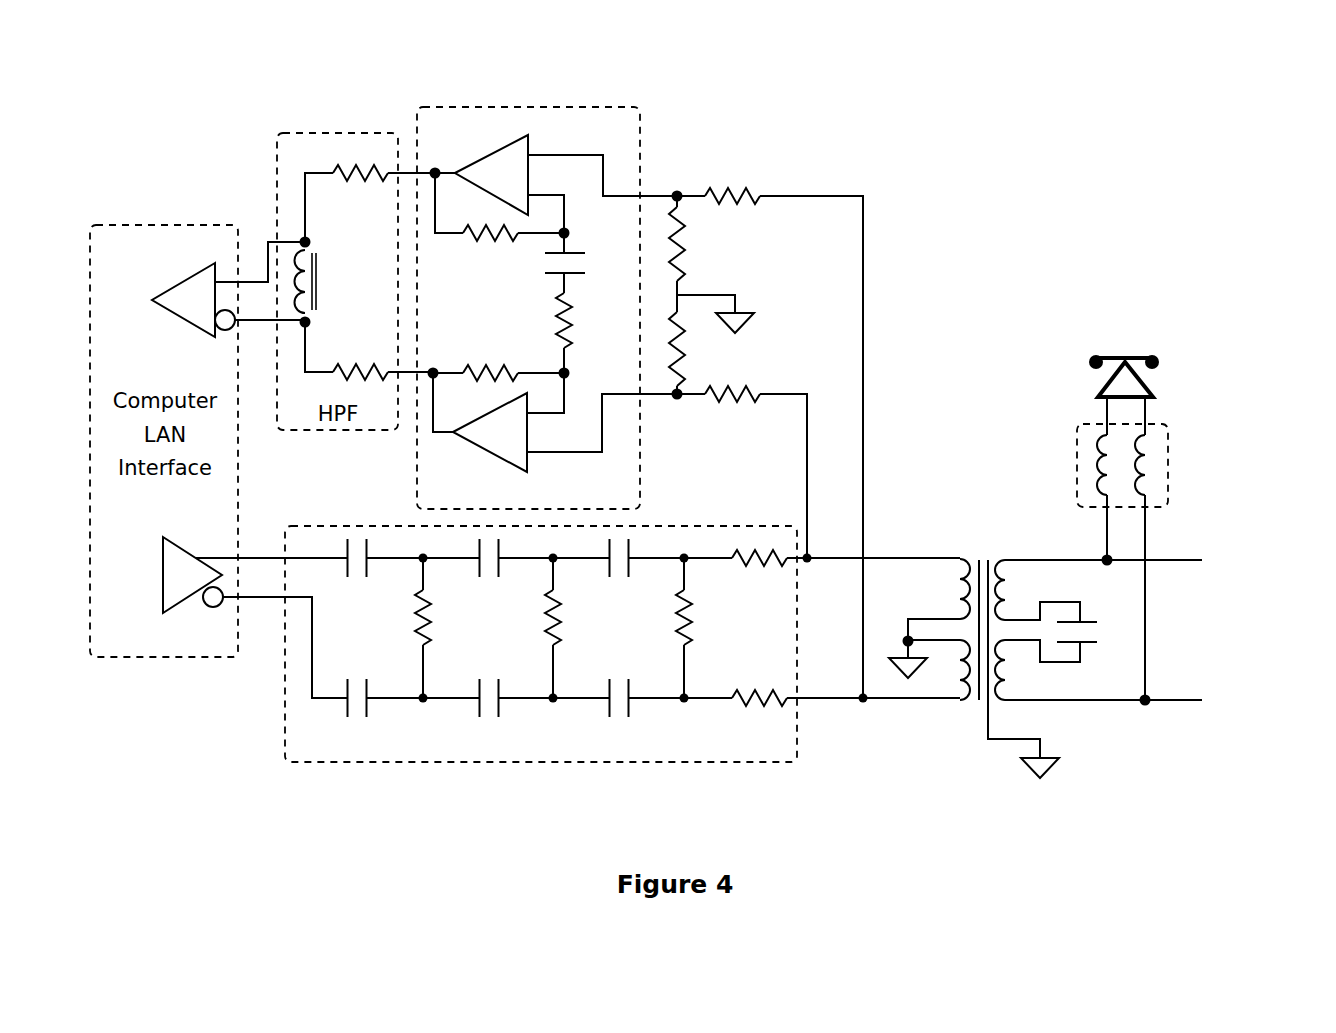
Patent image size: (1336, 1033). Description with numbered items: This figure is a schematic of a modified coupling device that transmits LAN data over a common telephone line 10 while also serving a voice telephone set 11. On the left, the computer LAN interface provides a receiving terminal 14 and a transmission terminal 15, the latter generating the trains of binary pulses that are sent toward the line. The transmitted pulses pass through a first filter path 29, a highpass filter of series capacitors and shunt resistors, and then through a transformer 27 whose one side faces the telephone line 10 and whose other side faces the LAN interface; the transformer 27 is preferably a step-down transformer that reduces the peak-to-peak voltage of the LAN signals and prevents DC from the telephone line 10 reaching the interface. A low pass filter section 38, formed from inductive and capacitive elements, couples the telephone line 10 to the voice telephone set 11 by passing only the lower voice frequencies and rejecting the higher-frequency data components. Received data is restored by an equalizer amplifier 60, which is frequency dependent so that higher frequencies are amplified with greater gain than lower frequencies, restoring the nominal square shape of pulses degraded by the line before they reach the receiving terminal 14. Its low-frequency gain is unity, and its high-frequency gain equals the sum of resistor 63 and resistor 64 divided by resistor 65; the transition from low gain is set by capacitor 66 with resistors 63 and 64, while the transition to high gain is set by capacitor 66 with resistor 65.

The common telephone line 10 is at (1273, 590).
The voice telephone set 11 is at (1162, 375).
The receiving terminal 14 is at (165, 287).
The transmission terminal 15 is at (158, 562).
The transformer 27 is at (985, 555).
The first filter path 29 is at (745, 768).
The low pass filter section 38 is at (1172, 453).
The equalizer amplifier 60 is at (547, 275).
The resistor 63 is at (482, 247).
The resistor 64 is at (487, 362).
The resistor 65 is at (572, 319).
The capacitor 66 is at (584, 256).